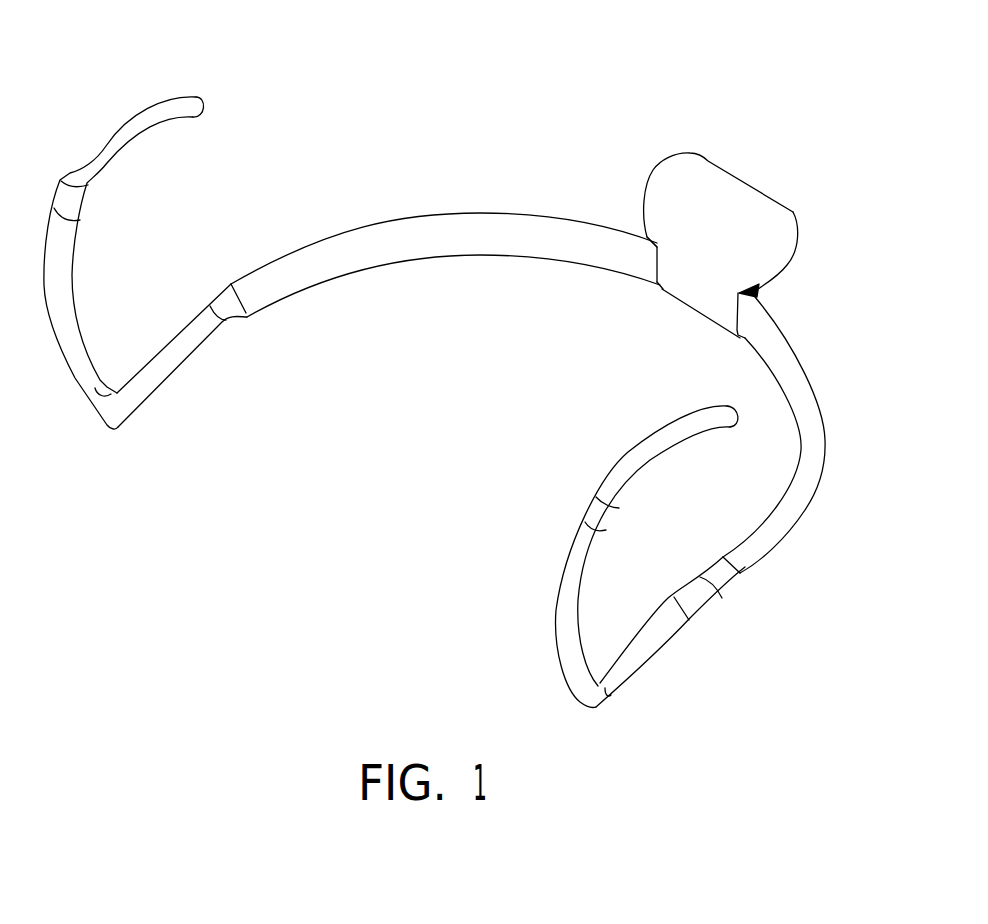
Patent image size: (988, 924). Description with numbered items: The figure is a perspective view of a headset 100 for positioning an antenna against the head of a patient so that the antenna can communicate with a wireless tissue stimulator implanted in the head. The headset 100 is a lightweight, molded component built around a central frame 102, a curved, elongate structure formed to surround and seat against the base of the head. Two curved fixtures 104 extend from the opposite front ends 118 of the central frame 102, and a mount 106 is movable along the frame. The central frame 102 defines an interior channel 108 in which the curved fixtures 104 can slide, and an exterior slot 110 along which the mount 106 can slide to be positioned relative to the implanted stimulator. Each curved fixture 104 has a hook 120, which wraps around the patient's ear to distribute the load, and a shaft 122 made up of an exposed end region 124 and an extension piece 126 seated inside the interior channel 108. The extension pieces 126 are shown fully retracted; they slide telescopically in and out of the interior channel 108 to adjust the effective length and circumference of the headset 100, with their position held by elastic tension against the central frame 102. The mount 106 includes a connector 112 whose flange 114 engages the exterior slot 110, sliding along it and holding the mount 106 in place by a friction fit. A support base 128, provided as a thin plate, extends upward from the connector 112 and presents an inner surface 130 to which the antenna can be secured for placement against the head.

The headset 100 is at (707, 97).
The central frame 102 is at (797, 342).
The curved fixture 104 is at (78, 138).
The mount 106 is at (772, 172).
The interior channel 108 is at (499, 495).
The exterior slot 110 is at (441, 257).
The connector 112 is at (661, 285).
The flange 114 is at (727, 331).
The front end 118 is at (223, 333).
The hook 120 is at (193, 97).
The shaft 122 is at (138, 259).
The exposed end region 124 is at (145, 338).
The extension piece 126 is at (242, 320).
The support base 128 is at (787, 227).
The inner surface 130 is at (718, 217).